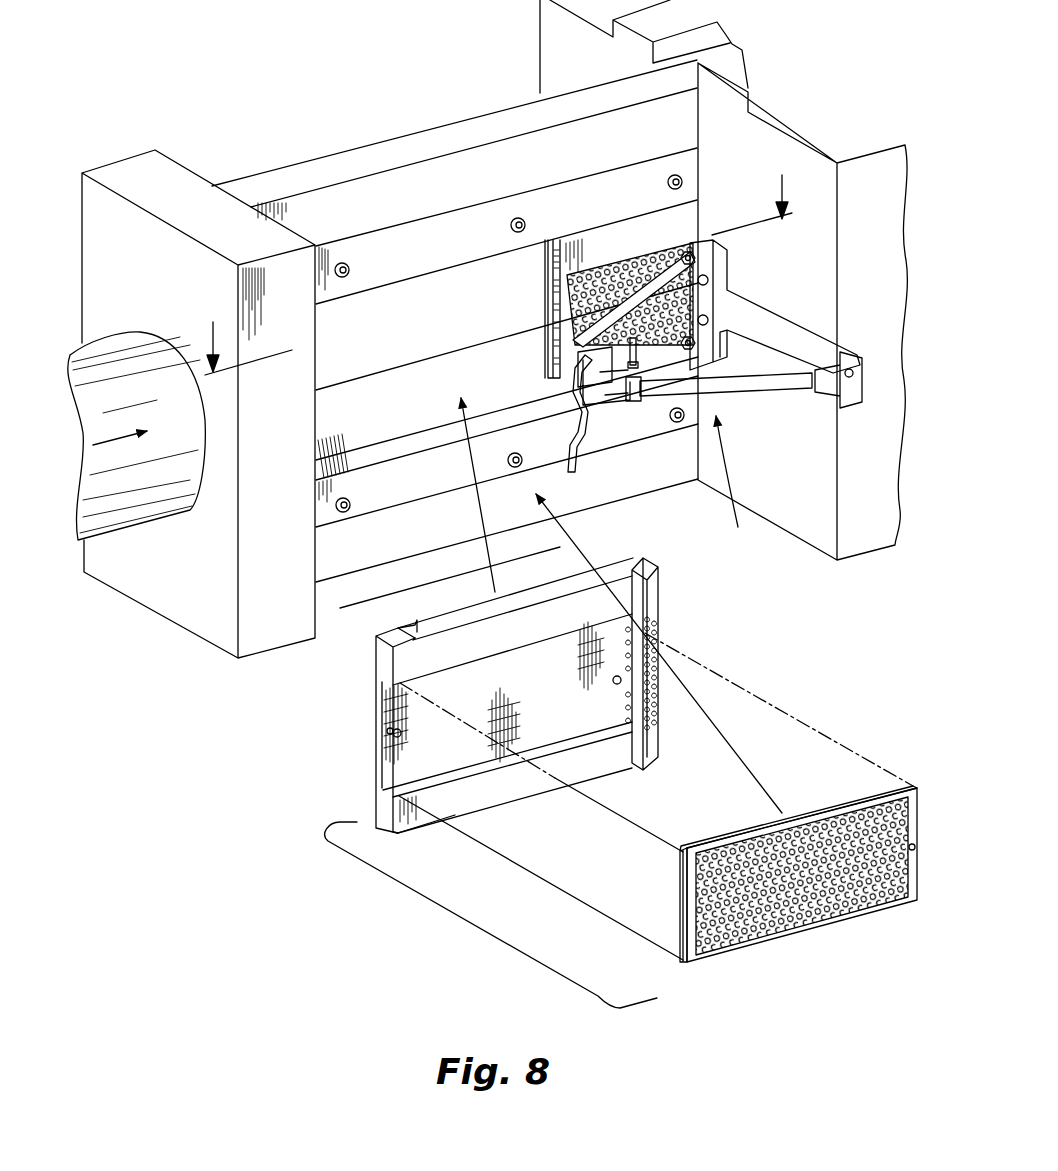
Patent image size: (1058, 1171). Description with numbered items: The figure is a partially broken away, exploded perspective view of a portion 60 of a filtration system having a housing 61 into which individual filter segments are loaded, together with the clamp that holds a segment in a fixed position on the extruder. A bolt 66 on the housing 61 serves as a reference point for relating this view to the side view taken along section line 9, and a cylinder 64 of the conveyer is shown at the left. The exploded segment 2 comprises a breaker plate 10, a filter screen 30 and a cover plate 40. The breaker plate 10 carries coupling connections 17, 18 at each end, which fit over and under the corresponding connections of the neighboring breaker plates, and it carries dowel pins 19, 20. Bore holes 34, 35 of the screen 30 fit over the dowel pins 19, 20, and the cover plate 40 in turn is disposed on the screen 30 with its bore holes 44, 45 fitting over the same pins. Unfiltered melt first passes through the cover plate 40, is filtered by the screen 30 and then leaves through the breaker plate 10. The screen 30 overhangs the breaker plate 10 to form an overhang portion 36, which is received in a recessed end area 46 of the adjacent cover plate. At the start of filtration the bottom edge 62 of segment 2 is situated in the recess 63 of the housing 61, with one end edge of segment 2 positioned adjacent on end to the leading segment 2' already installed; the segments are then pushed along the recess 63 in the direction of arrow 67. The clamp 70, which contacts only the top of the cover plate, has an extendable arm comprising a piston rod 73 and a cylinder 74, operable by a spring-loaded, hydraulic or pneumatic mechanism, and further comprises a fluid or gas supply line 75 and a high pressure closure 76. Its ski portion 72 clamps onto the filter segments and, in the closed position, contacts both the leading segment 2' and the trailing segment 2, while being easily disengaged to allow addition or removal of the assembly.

The portion of a filtration system 60 is at (265, 112).
The housing 61 is at (348, 156).
The bolt 66 is at (342, 262).
The section line 9- 9 is at (498, 262).
The recess 63 is at (500, 420).
The cylinder 64 is at (168, 517).
The arrow 67 is at (122, 440).
The clamp 70 is at (802, 311).
The segment 2' is at (587, 308).
The overhang portion 36 is at (550, 326).
The fluid or gas supply line 75 is at (722, 291).
The piston rod 73 is at (810, 352).
The cylinder 74 is at (770, 400).
The high pressure closure 76 is at (633, 402).
The ski portion 72 is at (590, 445).
The breaker plate 10 is at (371, 728).
The coupling connection 17 is at (395, 625).
The coupling connection 18 is at (647, 593).
The bore hole 35 is at (614, 686).
The filter screen 30 is at (378, 779).
The dowel pin 20 is at (630, 678).
The bore hole 34 is at (388, 728).
The dowel pin 19 is at (395, 736).
The bottom edge 62 is at (400, 838).
The cover plate 40 is at (675, 882).
The recessed end area 46 is at (912, 786).
The bore hole 45 is at (918, 853).
The bore hole 44 is at (690, 900).
The segment 2 is at (491, 915).